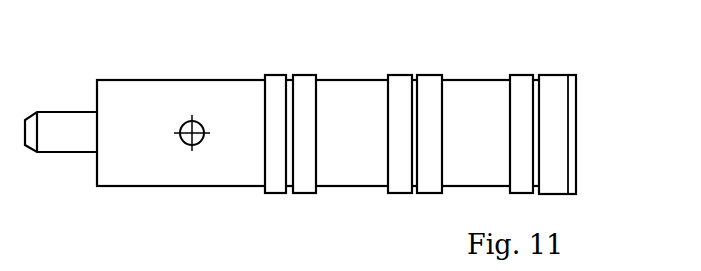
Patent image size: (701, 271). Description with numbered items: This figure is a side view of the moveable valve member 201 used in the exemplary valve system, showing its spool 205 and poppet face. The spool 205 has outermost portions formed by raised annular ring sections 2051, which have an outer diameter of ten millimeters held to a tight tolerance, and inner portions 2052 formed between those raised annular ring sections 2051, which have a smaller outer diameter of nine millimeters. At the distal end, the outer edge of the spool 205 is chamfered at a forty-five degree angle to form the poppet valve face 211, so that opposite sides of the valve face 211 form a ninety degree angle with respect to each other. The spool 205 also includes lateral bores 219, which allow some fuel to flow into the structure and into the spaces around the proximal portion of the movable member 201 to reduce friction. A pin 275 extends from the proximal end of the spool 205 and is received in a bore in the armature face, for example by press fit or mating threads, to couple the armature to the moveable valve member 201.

The moveable valve member 201 is at (187, 79).
The pin 275 is at (78, 76).
The lateral bores 219 is at (187, 143).
The spool 205 is at (308, 74).
The inner portions of the spool 2052 is at (362, 79).
The raised annular ring sections 2051 is at (432, 73).
The poppet valve face 211 is at (577, 77).